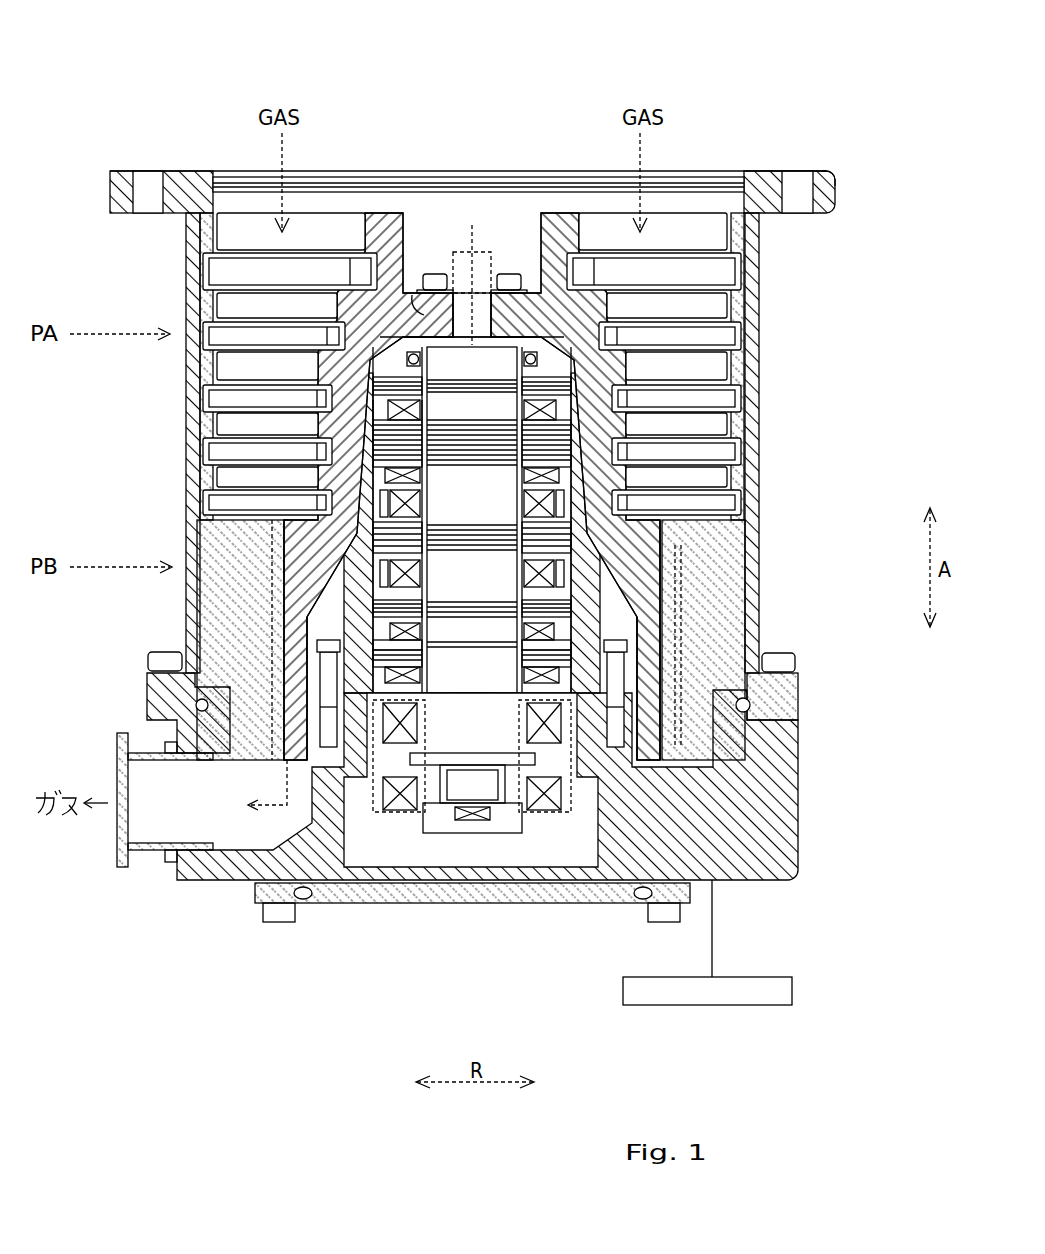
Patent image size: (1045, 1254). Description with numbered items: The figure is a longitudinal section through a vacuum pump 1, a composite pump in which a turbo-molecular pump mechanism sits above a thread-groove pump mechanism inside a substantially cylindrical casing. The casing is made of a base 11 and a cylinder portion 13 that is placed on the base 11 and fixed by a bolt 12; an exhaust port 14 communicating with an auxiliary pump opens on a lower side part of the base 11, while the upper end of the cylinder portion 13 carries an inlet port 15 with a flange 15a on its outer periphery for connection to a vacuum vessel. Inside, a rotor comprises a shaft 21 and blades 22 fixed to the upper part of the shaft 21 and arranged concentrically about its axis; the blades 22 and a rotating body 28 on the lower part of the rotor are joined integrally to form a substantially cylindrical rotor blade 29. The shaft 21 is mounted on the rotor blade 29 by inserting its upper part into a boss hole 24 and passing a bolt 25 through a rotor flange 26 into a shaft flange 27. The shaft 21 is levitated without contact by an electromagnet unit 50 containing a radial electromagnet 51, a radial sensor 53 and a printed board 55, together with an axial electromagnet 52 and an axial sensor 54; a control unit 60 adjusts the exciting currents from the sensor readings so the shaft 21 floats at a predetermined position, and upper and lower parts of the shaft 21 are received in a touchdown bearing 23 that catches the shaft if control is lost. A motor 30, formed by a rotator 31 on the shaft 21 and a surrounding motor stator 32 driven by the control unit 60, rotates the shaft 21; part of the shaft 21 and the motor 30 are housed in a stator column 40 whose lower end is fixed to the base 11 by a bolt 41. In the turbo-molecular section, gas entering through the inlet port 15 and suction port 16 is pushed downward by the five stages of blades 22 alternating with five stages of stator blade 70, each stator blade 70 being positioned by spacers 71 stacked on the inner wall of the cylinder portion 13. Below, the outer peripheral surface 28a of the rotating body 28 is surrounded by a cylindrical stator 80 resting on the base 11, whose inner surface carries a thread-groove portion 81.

The vacuum pump 1 is at (690, 70).
The base 11 is at (743, 872).
The bolt 12 is at (160, 662).
The cylinder portion 13 is at (761, 480).
The exhaust port 14 is at (120, 830).
The inlet port 15 is at (722, 171).
The flange 15a is at (823, 171).
The suction port 16 is at (700, 178).
The shaft 21 is at (478, 343).
The blades 22 is at (700, 301).
The touchdown bearing 23 is at (538, 358).
The boss hole 24 is at (480, 262).
The bolt 25 is at (437, 274).
The rotor flange 26 is at (432, 316).
The shaft flange 27 is at (462, 303).
The rotating body 28 is at (645, 533).
The outer peripheral surface 28a is at (660, 558).
The rotor blade 29 is at (612, 487).
The motor 30 is at (80, 382).
The rotator 31 is at (440, 515).
The motor stator 32 is at (385, 527).
The stator column 40 is at (345, 637).
The bolt 41 is at (328, 651).
The electromagnet unit 50 is at (80, 462).
The radial electromagnet 51 is at (566, 445).
The axial electromagnet 52 is at (400, 808).
The radial sensor 53 is at (566, 384).
The axial sensor 54 is at (487, 825).
The printed board 55 is at (560, 398).
The control unit 60 is at (742, 1006).
The stator blade 70 is at (233, 277).
The spacers 71 is at (210, 307).
The stator 80 is at (730, 607).
The thread-groove portion 81 is at (676, 650).